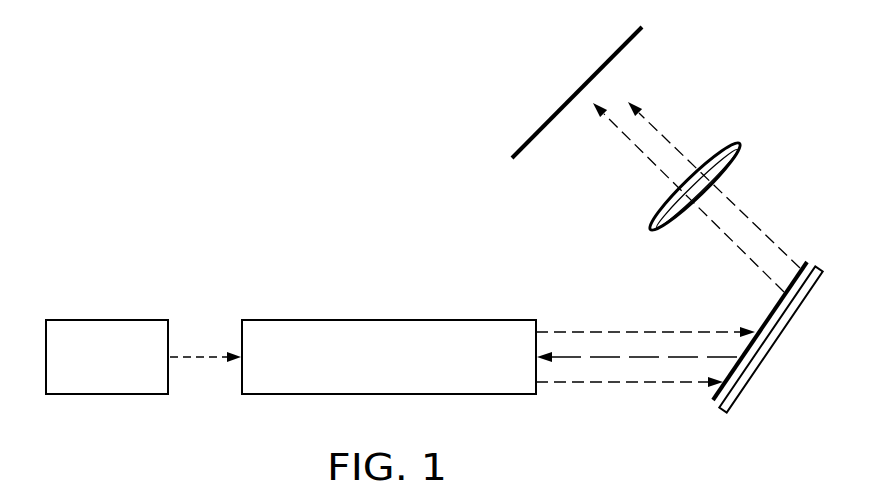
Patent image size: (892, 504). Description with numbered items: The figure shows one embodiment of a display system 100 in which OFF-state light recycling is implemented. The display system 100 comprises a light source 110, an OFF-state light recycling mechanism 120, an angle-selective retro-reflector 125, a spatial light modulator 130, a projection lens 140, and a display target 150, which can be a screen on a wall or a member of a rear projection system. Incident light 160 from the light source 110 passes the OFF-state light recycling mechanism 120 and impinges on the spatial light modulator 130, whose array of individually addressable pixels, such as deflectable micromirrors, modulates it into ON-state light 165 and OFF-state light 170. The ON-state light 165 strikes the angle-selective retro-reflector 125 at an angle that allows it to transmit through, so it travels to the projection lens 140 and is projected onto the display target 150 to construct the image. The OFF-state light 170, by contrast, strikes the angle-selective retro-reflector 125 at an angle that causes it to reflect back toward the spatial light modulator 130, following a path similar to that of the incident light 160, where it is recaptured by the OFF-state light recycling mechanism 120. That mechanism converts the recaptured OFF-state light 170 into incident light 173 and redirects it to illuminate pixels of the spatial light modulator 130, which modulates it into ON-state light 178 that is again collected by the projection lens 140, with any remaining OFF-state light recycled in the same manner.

The display system 100 is at (241, 103).
The light source 110 is at (105, 395).
The OFF-state light recycling mechanism 120 is at (278, 396).
The angle-selective retro-reflector 125 is at (766, 310).
The spatial light modulator 130 is at (769, 352).
The projection lens 140 is at (741, 144).
The display target 150 is at (614, 53).
The incident light 160 is at (608, 330).
The ON-state light 165 is at (637, 147).
The OFF-state light 170 is at (585, 360).
The incident light 173 is at (657, 384).
The ON-state light 178 is at (661, 138).